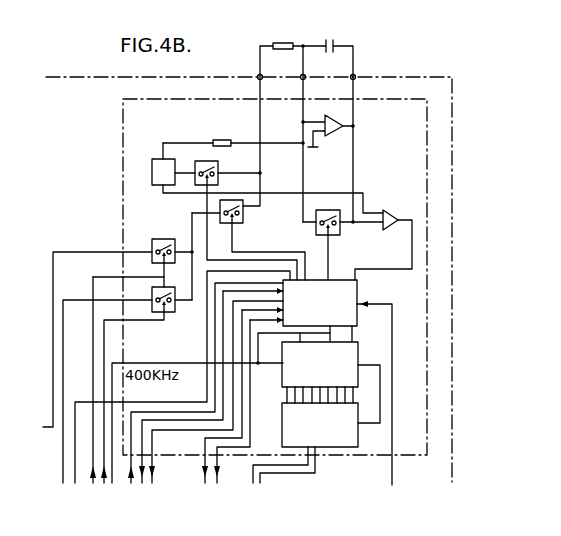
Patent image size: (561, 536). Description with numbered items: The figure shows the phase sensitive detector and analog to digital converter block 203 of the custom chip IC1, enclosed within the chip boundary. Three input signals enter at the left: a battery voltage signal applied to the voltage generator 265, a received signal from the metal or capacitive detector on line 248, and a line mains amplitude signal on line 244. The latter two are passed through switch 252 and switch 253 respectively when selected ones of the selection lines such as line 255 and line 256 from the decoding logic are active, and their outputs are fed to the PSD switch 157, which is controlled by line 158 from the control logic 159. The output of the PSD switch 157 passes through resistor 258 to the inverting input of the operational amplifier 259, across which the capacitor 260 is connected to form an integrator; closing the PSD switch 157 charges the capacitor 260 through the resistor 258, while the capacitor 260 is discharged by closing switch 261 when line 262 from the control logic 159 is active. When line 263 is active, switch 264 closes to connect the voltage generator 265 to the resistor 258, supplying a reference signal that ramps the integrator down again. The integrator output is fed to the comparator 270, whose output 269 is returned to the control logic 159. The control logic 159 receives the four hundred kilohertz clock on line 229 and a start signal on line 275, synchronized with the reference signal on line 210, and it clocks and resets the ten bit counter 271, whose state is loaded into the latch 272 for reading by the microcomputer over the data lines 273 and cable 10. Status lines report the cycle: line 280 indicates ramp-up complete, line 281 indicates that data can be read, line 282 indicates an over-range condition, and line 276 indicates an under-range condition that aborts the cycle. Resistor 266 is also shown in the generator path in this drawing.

The resistor 258 is at (281, 113).
The capacitor 260 is at (334, 45).
The operational amplifier 259 is at (329, 140).
The resistor 266 is at (234, 133).
The voltage generator 265 is at (152, 178).
The switch 264 is at (215, 167).
The line 263 is at (217, 258).
The PSD switch 157 is at (260, 206).
The switch 261 is at (322, 209).
The line 262 is at (330, 267).
The comparator 270 is at (390, 213).
The comparator output 269 is at (368, 269).
The control logic 159 is at (357, 290).
The line 282 is at (271, 293).
The status line 281 is at (243, 420).
The status line 280 is at (245, 444).
The line 158 is at (304, 251).
The line 210 is at (238, 270).
The switch 252 is at (167, 230).
The switch 253 is at (156, 285).
The line 248 is at (100, 251).
The line 244 is at (82, 291).
The line 275 is at (204, 304).
The line 255 is at (92, 356).
The line 256 is at (107, 343).
The 400 KHz clock line 229 is at (190, 362).
The line 276 is at (232, 381).
The ten bit counter 271 is at (332, 381).
The latch 272 is at (337, 436).
The data lines 273 is at (318, 470).
The cable 10 is at (272, 463).
The phase sensitive detector and analog to digital converter block 203 is at (405, 456).
The custom chip IC1 is at (452, 383).